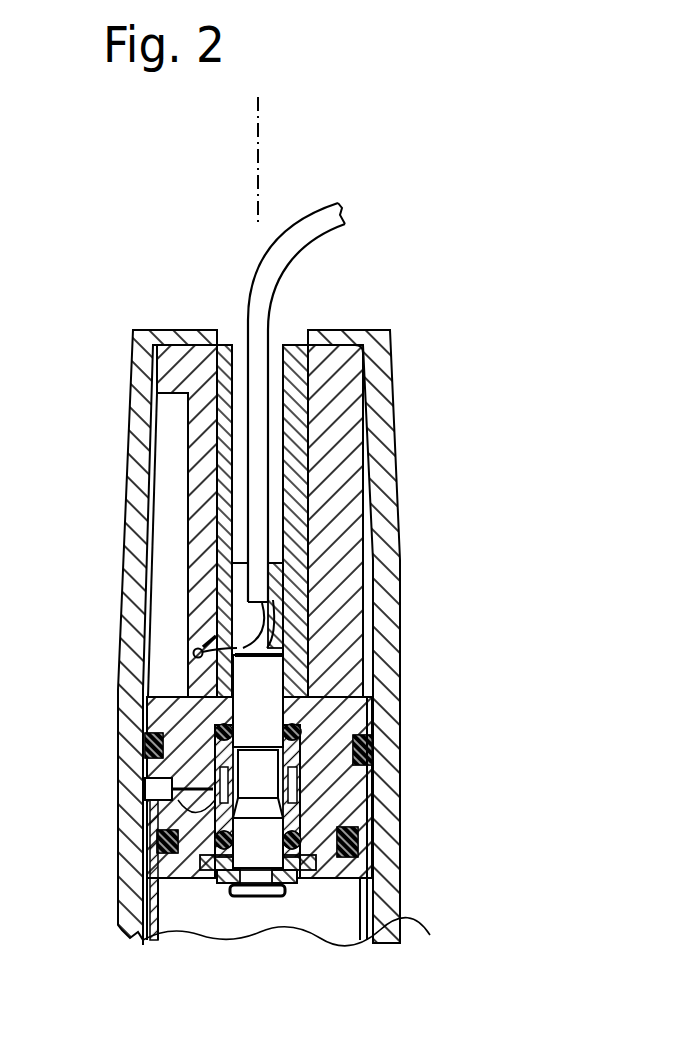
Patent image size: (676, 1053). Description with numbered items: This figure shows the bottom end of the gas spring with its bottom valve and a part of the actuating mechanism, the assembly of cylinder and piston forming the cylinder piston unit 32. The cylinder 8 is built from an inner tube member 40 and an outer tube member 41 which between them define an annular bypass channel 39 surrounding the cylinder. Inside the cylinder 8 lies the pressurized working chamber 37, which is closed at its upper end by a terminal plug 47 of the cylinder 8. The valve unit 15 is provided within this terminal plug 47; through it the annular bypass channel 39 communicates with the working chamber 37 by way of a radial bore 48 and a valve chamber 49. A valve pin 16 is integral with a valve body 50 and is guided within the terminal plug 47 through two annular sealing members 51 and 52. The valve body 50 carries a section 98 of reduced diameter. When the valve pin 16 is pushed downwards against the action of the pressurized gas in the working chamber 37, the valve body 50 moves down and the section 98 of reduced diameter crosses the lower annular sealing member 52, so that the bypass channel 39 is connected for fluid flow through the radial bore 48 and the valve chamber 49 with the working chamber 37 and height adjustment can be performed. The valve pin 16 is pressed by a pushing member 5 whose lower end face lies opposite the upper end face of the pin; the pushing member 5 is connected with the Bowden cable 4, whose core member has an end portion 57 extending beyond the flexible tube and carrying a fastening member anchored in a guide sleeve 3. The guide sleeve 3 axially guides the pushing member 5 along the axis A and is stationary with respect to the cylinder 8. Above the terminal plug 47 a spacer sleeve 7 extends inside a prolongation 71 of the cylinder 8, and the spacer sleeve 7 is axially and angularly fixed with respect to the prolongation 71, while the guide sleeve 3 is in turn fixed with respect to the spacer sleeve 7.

The axis A is at (258, 117).
The guide sleeve 3 is at (290, 393).
The Bowden cable 4 is at (278, 258).
The pushing member 5 is at (194, 655).
The spacer sleeve 7 is at (347, 435).
The cylinder 8 is at (265, 636).
The valve unit 15 is at (172, 768).
The valve pin 16 is at (268, 680).
The cylinder piston unit 32 is at (293, 764).
The working chamber 37 is at (343, 922).
The annular bypass channel 39 is at (143, 943).
The inner tube member 40 is at (158, 915).
The outer tube member 41 is at (402, 900).
The terminal plug 47 is at (335, 760).
The radial bore 48 is at (150, 805).
The valve chamber 49 is at (262, 765).
The valve body 50 is at (258, 850).
The annular sealing member 51 is at (150, 736).
The annular sealing member 52 is at (292, 858).
The end portion of the core member 57 is at (245, 642).
The prolongation 71 is at (395, 473).
The section of reduced diameter 98 is at (300, 727).